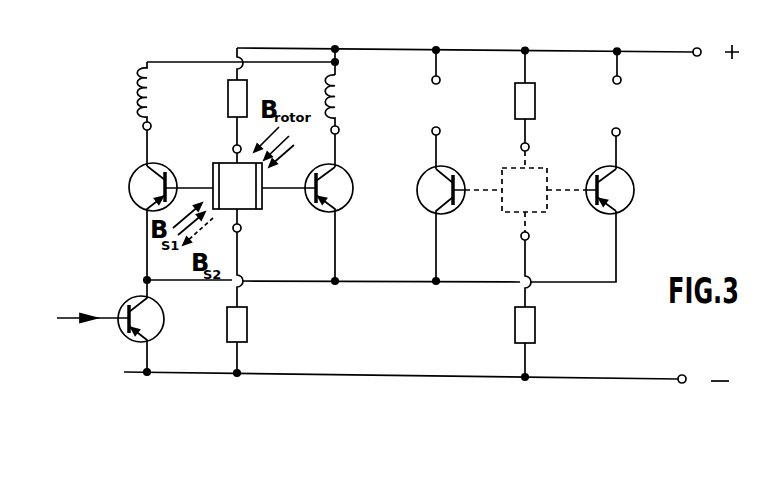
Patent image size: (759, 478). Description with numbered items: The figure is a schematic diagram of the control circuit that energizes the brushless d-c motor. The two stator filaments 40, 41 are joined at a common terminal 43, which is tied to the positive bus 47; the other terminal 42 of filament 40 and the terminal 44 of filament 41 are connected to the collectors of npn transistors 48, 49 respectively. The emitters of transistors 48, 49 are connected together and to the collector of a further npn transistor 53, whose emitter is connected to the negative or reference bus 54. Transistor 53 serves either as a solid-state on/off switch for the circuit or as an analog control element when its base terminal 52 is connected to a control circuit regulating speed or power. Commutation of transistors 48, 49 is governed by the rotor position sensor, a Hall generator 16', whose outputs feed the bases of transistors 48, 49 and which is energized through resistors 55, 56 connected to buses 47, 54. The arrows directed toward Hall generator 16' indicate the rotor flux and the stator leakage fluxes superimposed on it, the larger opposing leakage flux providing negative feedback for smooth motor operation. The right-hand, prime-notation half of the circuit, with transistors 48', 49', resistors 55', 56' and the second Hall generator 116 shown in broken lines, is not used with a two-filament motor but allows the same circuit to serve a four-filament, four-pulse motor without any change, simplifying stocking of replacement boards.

The filament 40 is at (142, 94).
The terminal 42 is at (144, 129).
The resistor 55 is at (218, 112).
The Hall generator 16' is at (240, 220).
The terminal 43 is at (340, 63).
The filament 41 is at (343, 93).
The terminal 44 is at (340, 131).
The positive bus 47 is at (486, 49).
The resistor 55' is at (545, 96).
The second Hall generator 116 is at (528, 178).
The npn transistor 48' is at (442, 165).
The npn transistor 49' is at (628, 132).
The npn transistor 48 is at (136, 221).
The npn transistor 49 is at (342, 222).
The npn transistor 53 is at (164, 320).
The base terminal 52 is at (83, 319).
The resistor 56 is at (250, 340).
The resistor 56' is at (540, 342).
The negative bus 54 is at (577, 376).